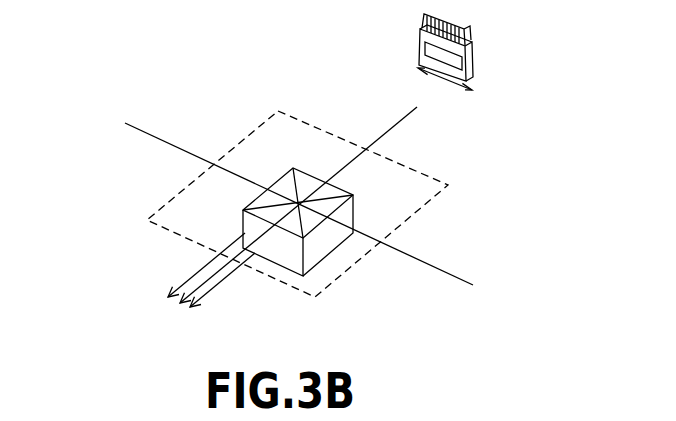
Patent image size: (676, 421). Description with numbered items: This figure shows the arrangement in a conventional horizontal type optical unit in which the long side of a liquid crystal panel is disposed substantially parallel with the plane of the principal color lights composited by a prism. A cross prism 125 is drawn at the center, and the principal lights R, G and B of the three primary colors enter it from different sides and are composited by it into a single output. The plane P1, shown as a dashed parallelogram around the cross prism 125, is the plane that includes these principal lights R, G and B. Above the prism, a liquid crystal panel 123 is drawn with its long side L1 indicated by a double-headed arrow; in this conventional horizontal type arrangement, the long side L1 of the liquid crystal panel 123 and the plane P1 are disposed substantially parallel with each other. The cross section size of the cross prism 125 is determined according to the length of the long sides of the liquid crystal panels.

The liquid crystal panel 123 is at (477, 59).
The cross prism 125 is at (318, 242).
The plane including principal lights P1 is at (418, 181).
The long side of liquid crystal panel L1 is at (431, 69).
The red principal light R is at (201, 155).
The green principal light G is at (367, 144).
The blue principal light B is at (397, 251).